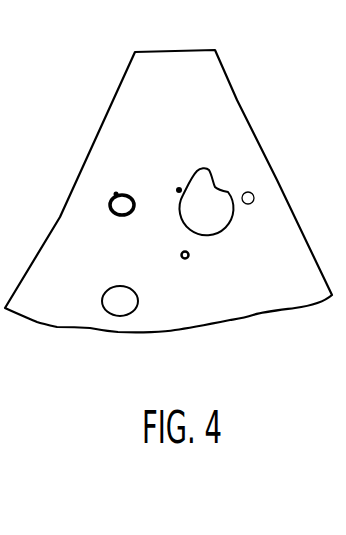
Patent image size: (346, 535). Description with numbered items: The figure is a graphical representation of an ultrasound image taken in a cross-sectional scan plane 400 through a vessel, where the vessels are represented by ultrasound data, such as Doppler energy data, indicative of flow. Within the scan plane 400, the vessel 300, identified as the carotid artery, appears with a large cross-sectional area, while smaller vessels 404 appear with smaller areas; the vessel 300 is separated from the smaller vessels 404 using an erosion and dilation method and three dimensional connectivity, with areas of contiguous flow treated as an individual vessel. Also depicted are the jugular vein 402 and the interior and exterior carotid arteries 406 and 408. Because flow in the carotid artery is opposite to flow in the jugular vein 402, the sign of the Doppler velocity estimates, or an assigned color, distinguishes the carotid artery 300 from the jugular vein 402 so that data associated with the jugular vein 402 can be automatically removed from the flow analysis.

The cross-sectional scan plane 400 is at (232, 78).
The vessel 300 is at (115, 192).
The jugular vein 402 is at (138, 300).
The smaller vessels 404 is at (247, 191).
The interior carotid artery 406 is at (107, 215).
The exterior carotid artery 408 is at (234, 222).